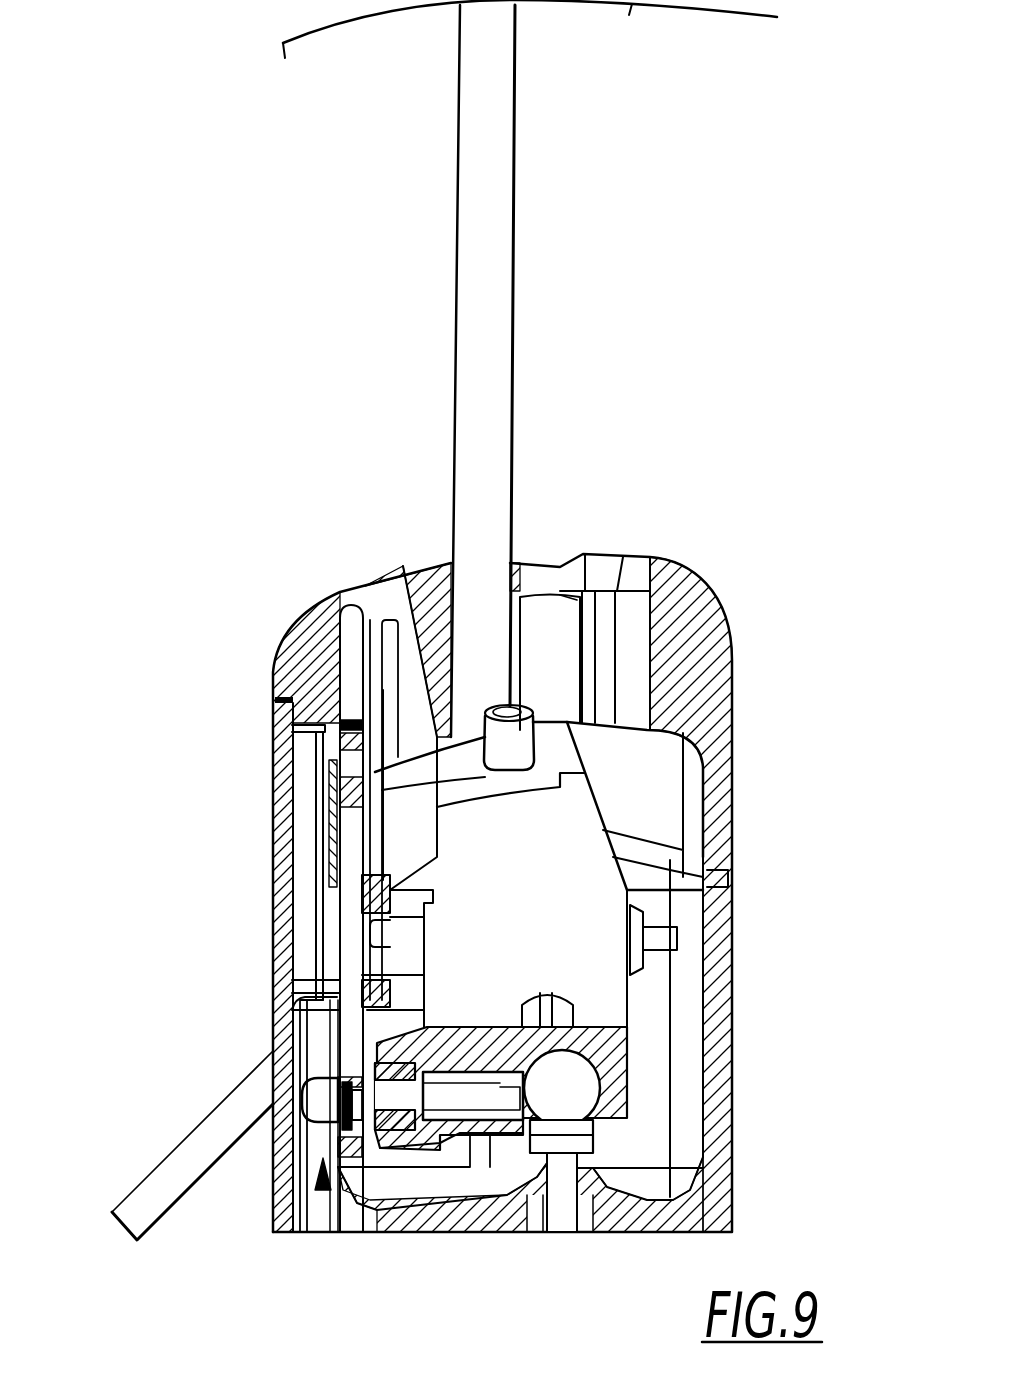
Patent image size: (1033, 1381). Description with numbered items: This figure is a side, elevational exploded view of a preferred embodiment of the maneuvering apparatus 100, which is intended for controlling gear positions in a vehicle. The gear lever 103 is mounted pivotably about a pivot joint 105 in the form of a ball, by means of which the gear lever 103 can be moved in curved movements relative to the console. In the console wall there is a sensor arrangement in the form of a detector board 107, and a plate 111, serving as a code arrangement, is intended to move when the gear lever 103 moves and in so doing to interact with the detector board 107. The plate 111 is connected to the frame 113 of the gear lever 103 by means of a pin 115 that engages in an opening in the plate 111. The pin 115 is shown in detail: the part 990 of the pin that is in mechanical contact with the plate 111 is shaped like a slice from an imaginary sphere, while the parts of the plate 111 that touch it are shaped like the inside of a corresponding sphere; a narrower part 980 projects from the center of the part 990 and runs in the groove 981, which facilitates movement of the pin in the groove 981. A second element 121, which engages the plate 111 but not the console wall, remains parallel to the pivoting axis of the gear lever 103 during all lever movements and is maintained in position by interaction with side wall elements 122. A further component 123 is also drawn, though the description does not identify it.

The maneuvering apparatus 100 is at (183, 262).
The gear lever 103 is at (497, 347).
The pivot joint 105 is at (578, 1085).
The detector board 107 is at (302, 806).
The plate 111 is at (352, 1033).
The frame 113 is at (647, 760).
The pin 115 is at (480, 1095).
The connection 121 is at (380, 947).
The side wall elements 122 is at (367, 997).
The nut 123 is at (330, 892).
The narrower part of the pin 980 is at (305, 1113).
The groove 981 is at (322, 1185).
The sphere-slice part of the pin 990 is at (295, 1138).